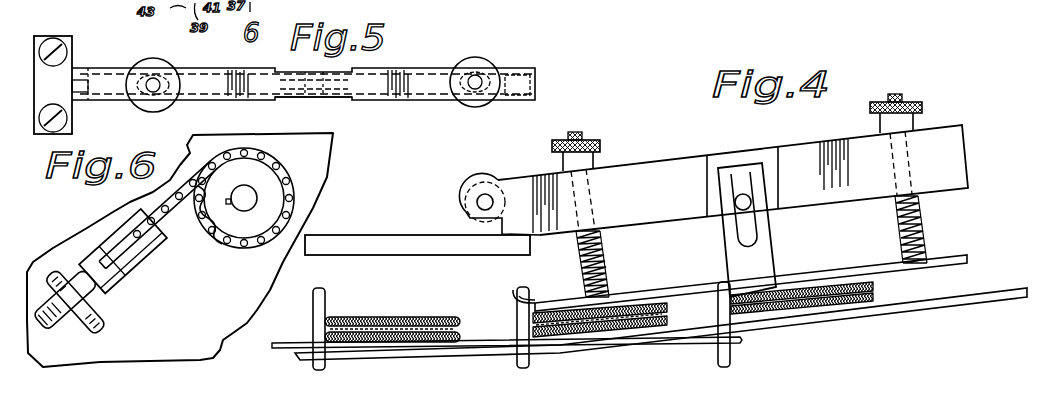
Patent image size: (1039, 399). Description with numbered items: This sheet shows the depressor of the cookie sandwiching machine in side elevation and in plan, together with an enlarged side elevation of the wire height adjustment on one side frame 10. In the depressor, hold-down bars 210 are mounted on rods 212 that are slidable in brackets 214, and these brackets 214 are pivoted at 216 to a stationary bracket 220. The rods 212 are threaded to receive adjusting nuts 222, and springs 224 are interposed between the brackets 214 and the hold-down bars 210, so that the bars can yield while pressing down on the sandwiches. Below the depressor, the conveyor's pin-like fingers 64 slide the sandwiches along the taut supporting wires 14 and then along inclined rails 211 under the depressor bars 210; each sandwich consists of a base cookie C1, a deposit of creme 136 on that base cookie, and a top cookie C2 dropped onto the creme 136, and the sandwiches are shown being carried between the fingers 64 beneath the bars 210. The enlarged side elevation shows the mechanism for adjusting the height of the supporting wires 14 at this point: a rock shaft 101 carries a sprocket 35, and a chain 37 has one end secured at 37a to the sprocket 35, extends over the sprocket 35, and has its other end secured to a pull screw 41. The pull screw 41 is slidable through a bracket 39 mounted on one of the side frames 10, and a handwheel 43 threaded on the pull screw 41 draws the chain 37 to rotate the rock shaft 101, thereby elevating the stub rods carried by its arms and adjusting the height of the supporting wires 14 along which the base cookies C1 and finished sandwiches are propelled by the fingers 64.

In FIG. 6, the side frame 10 is at (83, 238).
In FIG. 4, the supporting wires 14 is at (280, 343).
In FIG. 6, the sprocket 35 is at (214, 229).
In FIG. 6, the chain 37 is at (165, 199).
In FIG. 6, the chain end securement 37a is at (229, 246).
In FIG. 6, the bracket 39 is at (112, 286).
In FIG. 6, the pull screw 41 is at (58, 332).
In FIG. 6, the handwheel 43 is at (104, 331).
In FIG. 4, the pin-like fingers 64 is at (313, 308).
In FIG. 6, the rock shaft 101 is at (247, 188).
In FIG. 4, the creme 136 is at (609, 318).
In FIG. 5, the hold-down bars 210 is at (366, 101).
In FIG. 4, the hold-down bars 210 is at (853, 272).
In FIG. 4, the inclined rails 211 is at (890, 303).
In FIG. 5, the rods 212 is at (153, 92).
In FIG. 4, the rods 212 is at (599, 262).
In FIG. 5, the brackets 214 is at (226, 98).
In FIG. 4, the brackets 214 is at (681, 166).
In FIG. 5, the pivot 216 is at (72, 72).
In FIG. 4, the pivot 216 is at (487, 196).
In FIG. 4, the stationary bracket 220 is at (398, 240).
In FIG. 5, the adjusting nuts 222 is at (155, 63).
In FIG. 4, the adjusting nuts 222 is at (588, 140).
In FIG. 4, the springs 224 is at (599, 236).
In FIG. 4, the top cookies C2 is at (637, 297).
In FIG. 4, the base cookies C1 is at (573, 336).